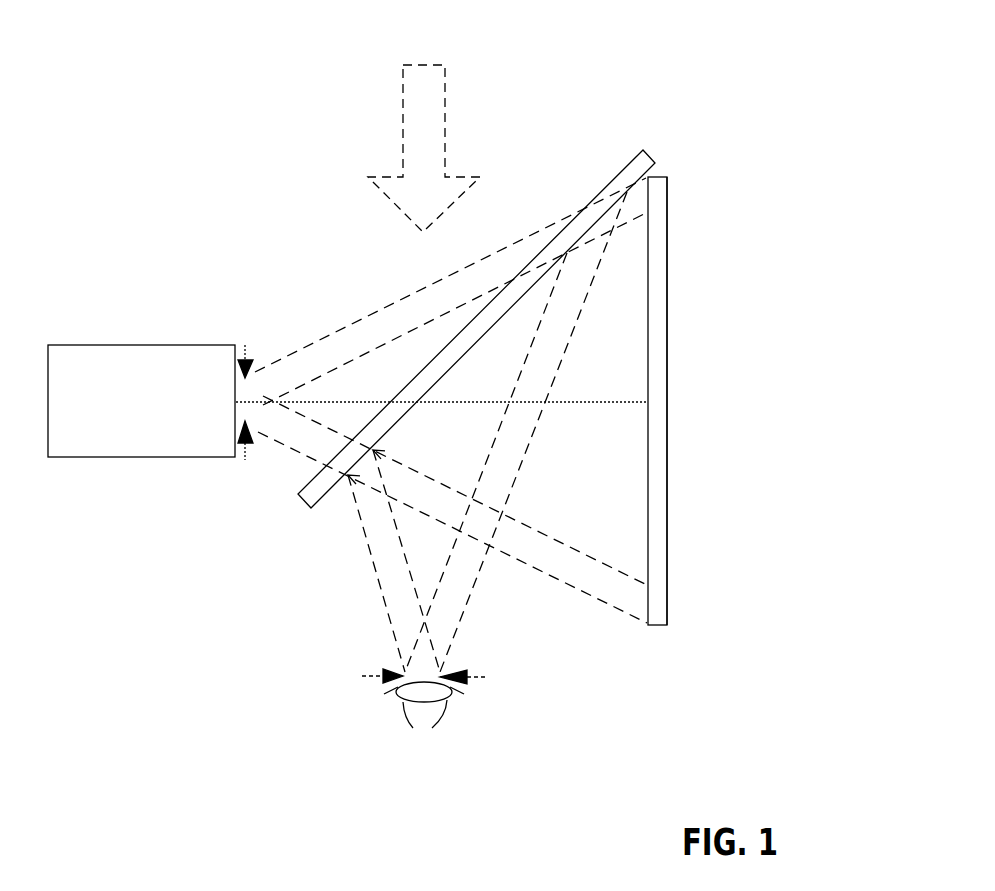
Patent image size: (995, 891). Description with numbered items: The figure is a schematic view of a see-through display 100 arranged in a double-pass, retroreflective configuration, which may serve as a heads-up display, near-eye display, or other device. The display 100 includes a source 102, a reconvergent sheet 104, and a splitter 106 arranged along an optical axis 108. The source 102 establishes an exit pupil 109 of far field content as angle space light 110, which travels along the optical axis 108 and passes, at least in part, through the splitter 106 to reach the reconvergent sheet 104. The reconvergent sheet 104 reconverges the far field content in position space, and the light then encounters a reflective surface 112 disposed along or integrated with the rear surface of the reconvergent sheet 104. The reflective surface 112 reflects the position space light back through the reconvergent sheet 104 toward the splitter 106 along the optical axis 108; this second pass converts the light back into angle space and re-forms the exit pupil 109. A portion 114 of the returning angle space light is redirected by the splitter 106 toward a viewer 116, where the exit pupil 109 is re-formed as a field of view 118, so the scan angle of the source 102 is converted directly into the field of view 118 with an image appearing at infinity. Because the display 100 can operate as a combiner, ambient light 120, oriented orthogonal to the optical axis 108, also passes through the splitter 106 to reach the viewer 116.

The display 100 is at (652, 62).
The source 102 is at (162, 426).
The reconvergent sheet 104 is at (657, 626).
The splitter 106 is at (630, 163).
The optical axis 108 is at (566, 404).
The exit pupil 109 is at (247, 349).
The angle space light 110 is at (404, 283).
The reflective surface 112 is at (668, 381).
The portion of the angle space light 114 is at (374, 583).
The viewer 116 is at (443, 703).
The field of view 118 is at (472, 681).
The ambient light 120 is at (403, 113).